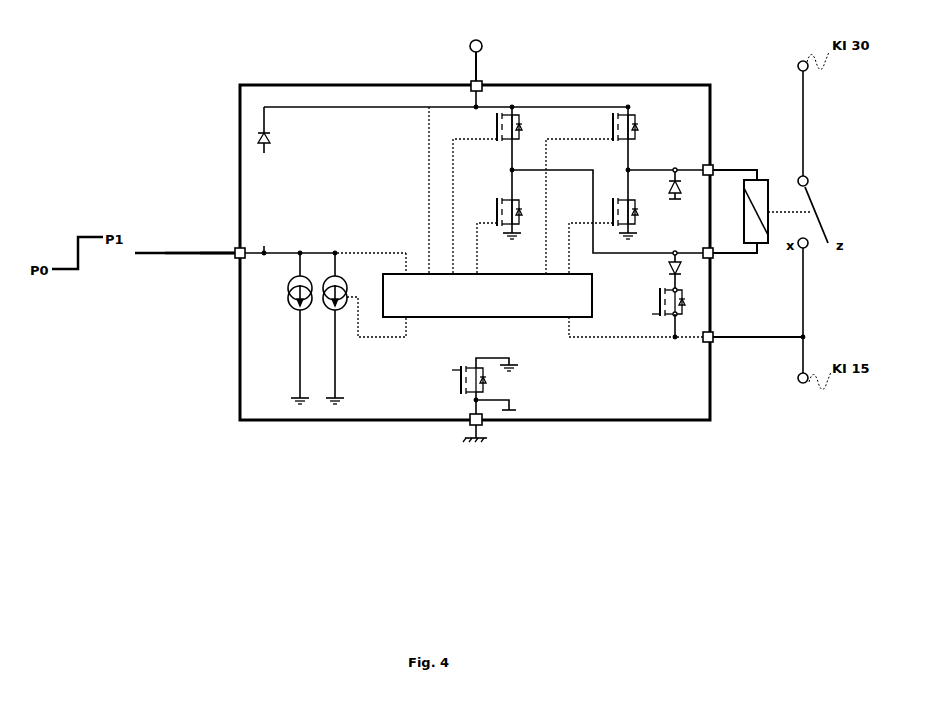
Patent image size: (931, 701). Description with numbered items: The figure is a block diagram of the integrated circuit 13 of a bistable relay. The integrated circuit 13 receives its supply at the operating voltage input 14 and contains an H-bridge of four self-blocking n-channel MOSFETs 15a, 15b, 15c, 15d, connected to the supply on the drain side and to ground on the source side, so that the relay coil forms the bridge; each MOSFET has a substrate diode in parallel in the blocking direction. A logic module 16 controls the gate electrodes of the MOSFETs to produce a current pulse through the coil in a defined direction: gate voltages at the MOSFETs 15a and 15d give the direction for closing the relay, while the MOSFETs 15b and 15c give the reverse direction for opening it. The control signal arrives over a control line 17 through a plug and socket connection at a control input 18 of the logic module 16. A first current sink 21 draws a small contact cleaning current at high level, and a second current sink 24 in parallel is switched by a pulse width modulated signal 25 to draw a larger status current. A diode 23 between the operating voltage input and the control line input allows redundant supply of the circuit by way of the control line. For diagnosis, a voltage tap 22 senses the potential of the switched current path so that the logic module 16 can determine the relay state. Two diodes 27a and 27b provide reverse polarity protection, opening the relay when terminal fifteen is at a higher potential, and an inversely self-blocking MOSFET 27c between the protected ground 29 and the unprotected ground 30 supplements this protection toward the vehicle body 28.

The integrated circuit 13 is at (475, 252).
The operating voltage input 14 is at (481, 83).
The self-blocking n-channel MOSFET 15a is at (495, 132).
The self-blocking n-channel MOSFET 15b is at (611, 134).
The self-blocking n-channel MOSFET 15c is at (497, 214).
The self-blocking n-channel MOSFET 15d is at (644, 216).
The logic module 16 is at (487, 212).
The control line 17 is at (157, 261).
The control input 18 is at (233, 254).
The first current sink 21 is at (295, 314).
The voltage tap 22 is at (714, 332).
The diode for redundant voltage supply 23 is at (270, 140).
The second current sink 24 is at (343, 282).
The pulse width modulated signal 25 is at (395, 344).
The reverse polarity protection 27a is at (671, 188).
The reverse polarity protection 27b is at (671, 268).
The reverse polarity protection 27c is at (658, 302).
The vehicle body 28 is at (473, 450).
The protected ground 29 is at (515, 365).
The unprotected ground 30 is at (508, 400).